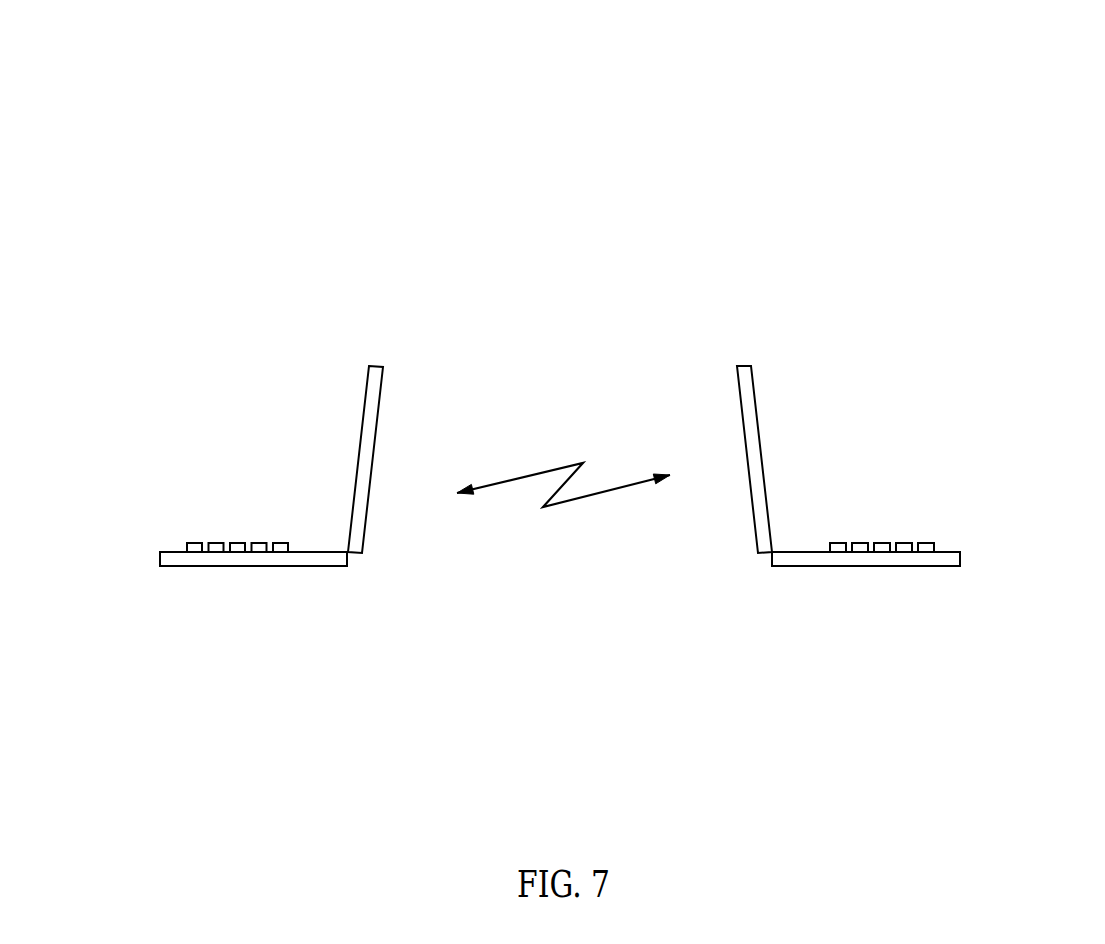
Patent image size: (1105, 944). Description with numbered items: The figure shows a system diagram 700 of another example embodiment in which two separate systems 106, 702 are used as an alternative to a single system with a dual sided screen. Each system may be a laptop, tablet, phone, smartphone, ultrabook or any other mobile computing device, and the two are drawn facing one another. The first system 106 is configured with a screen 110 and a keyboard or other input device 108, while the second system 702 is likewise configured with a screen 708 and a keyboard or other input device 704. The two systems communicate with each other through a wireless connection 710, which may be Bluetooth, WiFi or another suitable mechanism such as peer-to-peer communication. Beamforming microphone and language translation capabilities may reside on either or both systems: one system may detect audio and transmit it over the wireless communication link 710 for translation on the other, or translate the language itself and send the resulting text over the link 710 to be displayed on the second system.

The system diagram 700 is at (582, 50).
The system 106 is at (116, 403).
The keyboard or other input device 108 is at (160, 558).
The screen 110 is at (357, 457).
The system 702 is at (1004, 403).
The keyboard or other input device 704 is at (960, 558).
The screen 708 is at (763, 458).
The wireless connection 710 is at (572, 576).